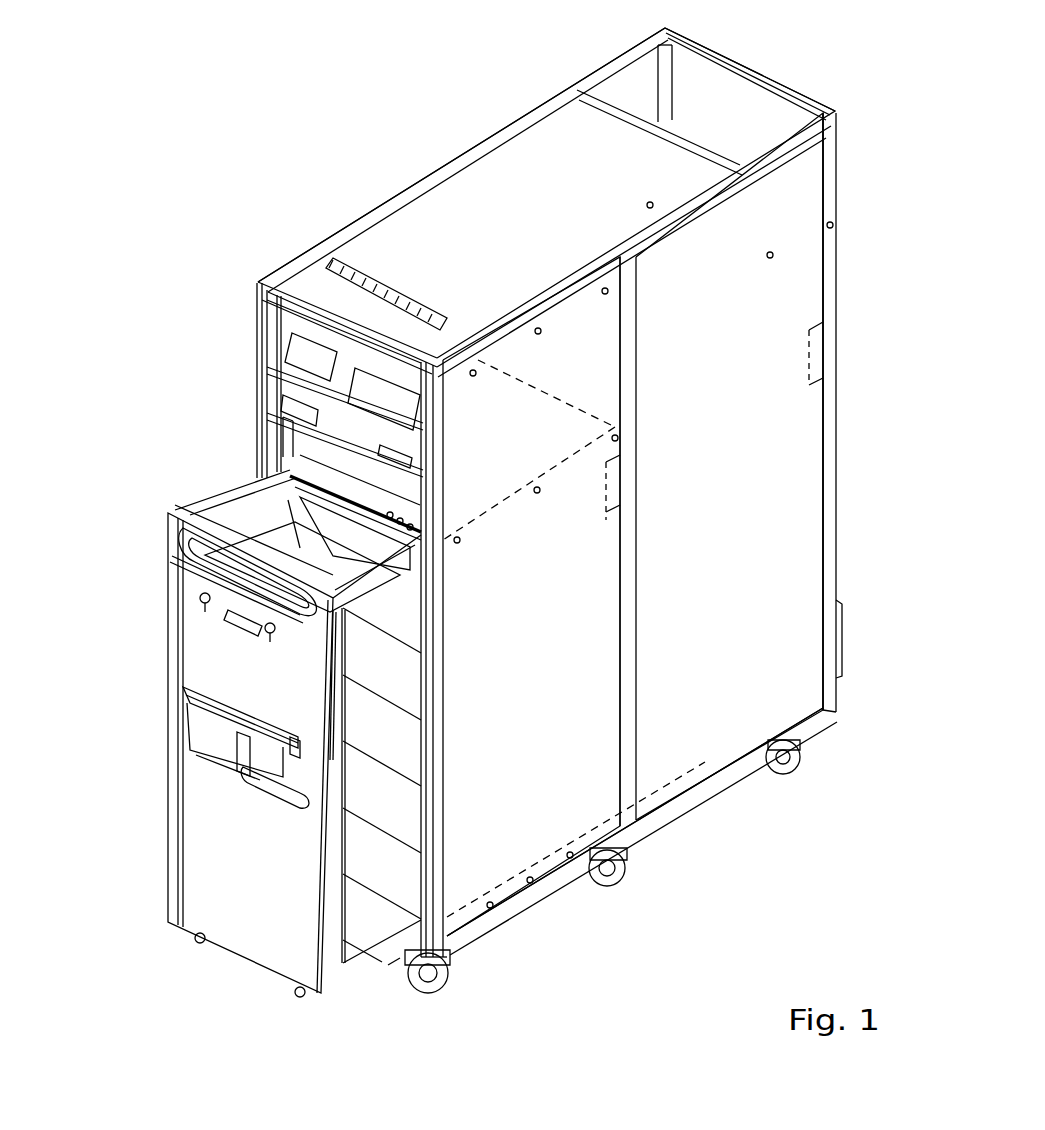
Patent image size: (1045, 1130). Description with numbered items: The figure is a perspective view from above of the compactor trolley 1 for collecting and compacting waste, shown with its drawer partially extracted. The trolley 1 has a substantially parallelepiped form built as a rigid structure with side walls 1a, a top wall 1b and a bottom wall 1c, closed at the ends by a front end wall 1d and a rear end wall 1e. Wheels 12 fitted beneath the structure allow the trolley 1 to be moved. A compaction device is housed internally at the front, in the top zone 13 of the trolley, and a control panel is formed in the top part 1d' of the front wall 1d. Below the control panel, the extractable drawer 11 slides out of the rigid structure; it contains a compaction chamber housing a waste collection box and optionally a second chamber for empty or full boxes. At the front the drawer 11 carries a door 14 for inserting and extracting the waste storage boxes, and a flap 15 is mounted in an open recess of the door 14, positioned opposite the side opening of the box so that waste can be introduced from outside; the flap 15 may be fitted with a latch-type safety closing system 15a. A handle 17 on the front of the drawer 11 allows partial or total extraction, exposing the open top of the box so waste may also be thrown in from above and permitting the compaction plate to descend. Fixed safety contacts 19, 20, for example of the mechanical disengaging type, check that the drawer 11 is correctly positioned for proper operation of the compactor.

The compactor trolley 1 is at (442, 16).
The extractable drawer 11 is at (123, 760).
The side walls 1a is at (743, 295).
The top wall 1b is at (553, 195).
The bottom wall 1c is at (830, 738).
The front end wall 1d is at (257, 402).
The top part of the front wall 1d' is at (227, 347).
The rear end wall 1e is at (852, 558).
The top zone 13 is at (495, 460).
The fixed safety contact 19 is at (630, 483).
The fixed safety contact 20 is at (834, 349).
The flap 15 is at (243, 677).
The door 14 is at (241, 890).
The handle 17 is at (200, 553).
The latch 15a is at (188, 594).
The wheels 12 is at (457, 985).